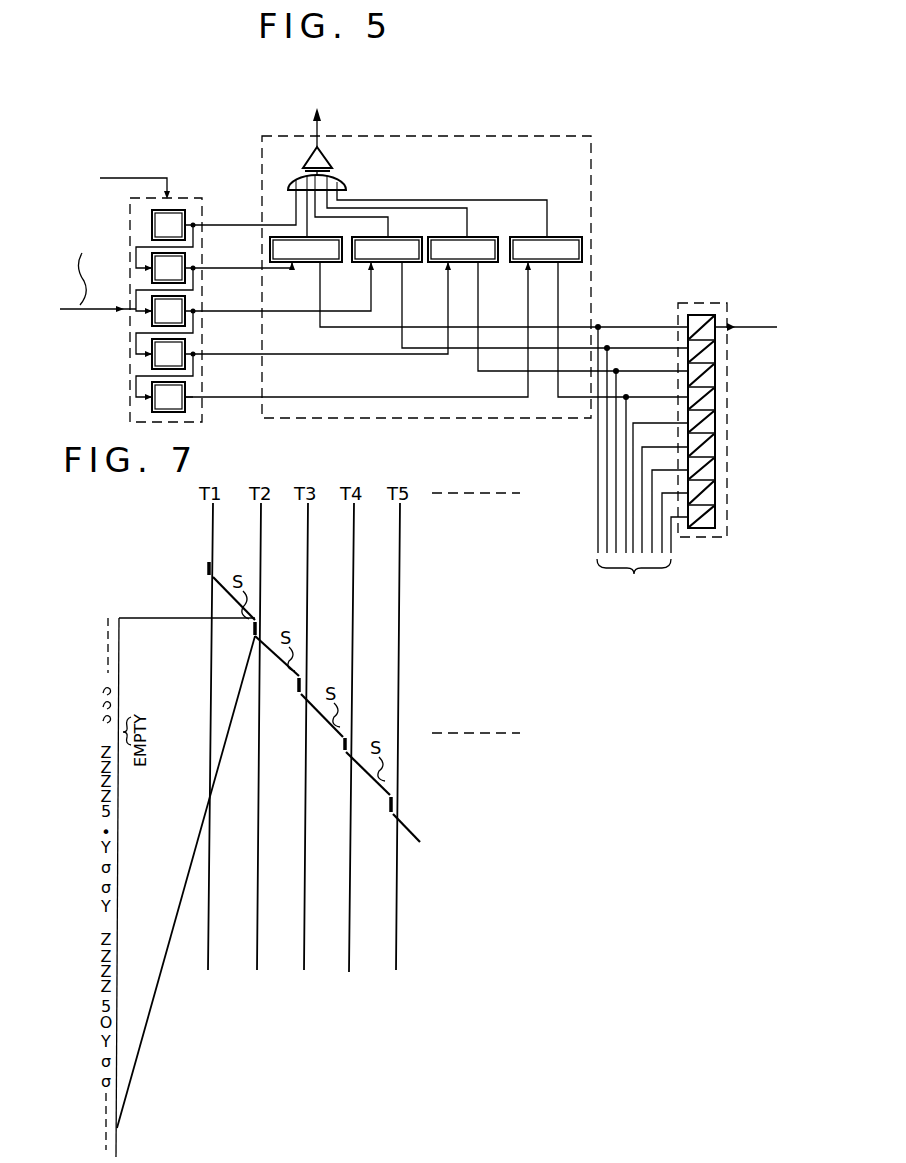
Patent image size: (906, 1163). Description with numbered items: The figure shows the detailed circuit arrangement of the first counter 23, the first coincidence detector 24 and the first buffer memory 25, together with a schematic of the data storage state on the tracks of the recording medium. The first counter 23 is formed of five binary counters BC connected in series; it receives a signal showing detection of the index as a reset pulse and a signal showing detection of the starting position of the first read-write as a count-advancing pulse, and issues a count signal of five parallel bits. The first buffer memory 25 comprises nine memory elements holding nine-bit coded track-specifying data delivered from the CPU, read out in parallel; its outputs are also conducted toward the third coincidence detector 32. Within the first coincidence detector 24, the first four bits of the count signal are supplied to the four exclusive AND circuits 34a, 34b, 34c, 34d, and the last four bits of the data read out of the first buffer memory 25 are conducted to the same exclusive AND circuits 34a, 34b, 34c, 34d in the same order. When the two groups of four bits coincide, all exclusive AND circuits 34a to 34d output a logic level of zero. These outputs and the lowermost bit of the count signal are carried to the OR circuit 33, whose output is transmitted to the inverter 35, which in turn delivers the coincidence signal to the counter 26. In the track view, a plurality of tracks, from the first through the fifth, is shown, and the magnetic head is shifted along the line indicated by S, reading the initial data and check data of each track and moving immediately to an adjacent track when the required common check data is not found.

The first counter 23 is at (199, 200).
The first coincidence detector 24 is at (627, 176).
The first buffer memory 25 is at (727, 321).
The counter 26 is at (365, 96).
The third coincidence detector 32 is at (700, 478).
The OR circuit 33 is at (346, 186).
The exclusive AND circuit 34a is at (281, 236).
The exclusive AND circuit 34b is at (353, 263).
The exclusive AND circuit 34c is at (469, 236).
The exclusive AND circuit 34d is at (583, 250).
The inverter 35 is at (331, 157).